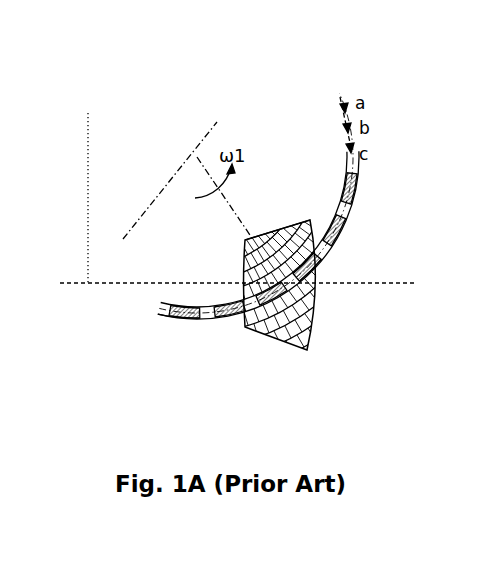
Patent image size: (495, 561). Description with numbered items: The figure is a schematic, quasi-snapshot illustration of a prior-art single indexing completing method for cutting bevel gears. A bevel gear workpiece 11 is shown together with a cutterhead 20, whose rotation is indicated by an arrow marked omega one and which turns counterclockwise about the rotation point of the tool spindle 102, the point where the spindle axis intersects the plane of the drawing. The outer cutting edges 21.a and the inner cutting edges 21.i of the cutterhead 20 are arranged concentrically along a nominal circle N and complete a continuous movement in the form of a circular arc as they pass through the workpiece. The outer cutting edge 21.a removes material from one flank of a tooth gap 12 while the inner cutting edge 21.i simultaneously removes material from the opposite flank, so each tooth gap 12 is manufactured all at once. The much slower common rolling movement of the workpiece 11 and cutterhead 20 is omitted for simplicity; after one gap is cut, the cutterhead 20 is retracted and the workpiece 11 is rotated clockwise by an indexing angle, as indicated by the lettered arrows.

The rotation point of the tool spindle 102 is at (196, 157).
The bevel gear workpiece 11 is at (307, 350).
The tooth gap 12 is at (279, 230).
The cutterhead 20 is at (349, 213).
The outer cutting edge 21.a is at (317, 272).
The inner cutting edge 21.i is at (315, 315).
The nominal circle N is at (162, 316).